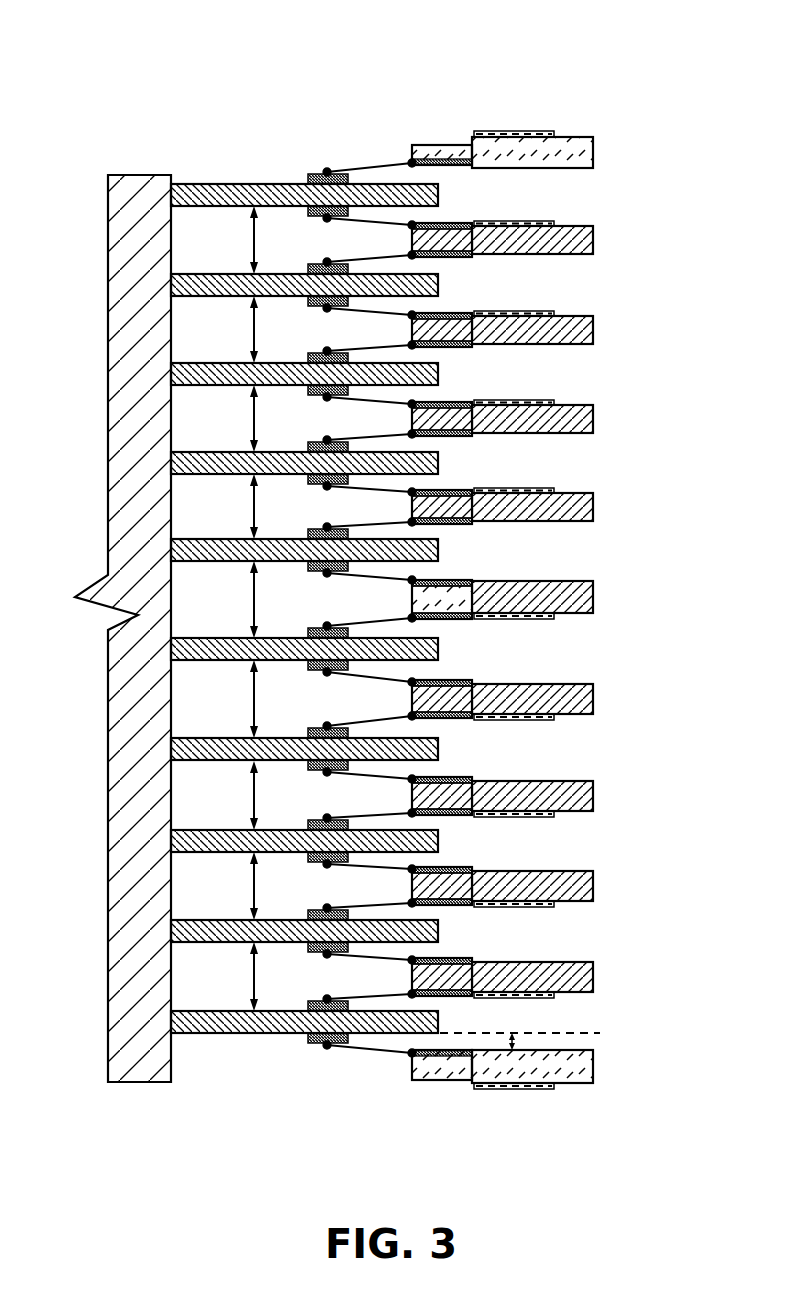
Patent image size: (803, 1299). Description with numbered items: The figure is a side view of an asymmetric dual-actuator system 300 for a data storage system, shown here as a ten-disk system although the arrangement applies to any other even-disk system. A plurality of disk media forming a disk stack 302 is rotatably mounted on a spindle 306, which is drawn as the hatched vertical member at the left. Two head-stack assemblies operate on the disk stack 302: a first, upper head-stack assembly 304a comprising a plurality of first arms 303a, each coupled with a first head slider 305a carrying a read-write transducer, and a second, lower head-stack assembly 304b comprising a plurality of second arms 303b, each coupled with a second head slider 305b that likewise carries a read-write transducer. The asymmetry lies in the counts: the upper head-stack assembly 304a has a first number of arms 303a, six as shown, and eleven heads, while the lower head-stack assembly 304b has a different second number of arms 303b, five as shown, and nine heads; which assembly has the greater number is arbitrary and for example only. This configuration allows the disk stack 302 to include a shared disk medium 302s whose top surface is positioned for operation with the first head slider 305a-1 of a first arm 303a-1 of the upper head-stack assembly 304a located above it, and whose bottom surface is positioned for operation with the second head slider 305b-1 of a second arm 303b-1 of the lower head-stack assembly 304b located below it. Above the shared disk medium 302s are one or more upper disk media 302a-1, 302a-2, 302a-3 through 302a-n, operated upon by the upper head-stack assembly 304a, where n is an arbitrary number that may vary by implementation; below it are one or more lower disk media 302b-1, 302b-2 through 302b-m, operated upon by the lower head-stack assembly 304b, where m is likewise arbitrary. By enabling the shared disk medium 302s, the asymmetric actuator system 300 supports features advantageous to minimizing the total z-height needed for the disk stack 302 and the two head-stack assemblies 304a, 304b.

The asymmetric dual-actuator system 300 is at (485, 85).
The disk stack 302 is at (192, 175).
The upper disk medium 302a-n is at (282, 208).
The upper disk medium 302a-3 is at (275, 362).
The upper disk medium 302a-2 is at (275, 451).
The upper disk medium 302a-1 is at (275, 538).
The shared disk medium 302s is at (278, 648).
The lower disk medium 302b-1 is at (273, 761).
The lower disk medium 302b-2 is at (280, 840).
The lower disk medium 302b-m is at (275, 1023).
The first head slider 305a is at (328, 163).
The first head slider of first arm 305a-1 is at (313, 627).
The second head slider of second arm 305b-1 is at (315, 672).
The second head slider 305b is at (328, 1060).
The spindle 306 is at (157, 1092).
The first head-stack assembly 304a is at (597, 630).
The first arms 303a is at (542, 376).
The first arm 303a-1 is at (586, 600).
The second head-stack assembly 304b is at (597, 1093).
The second arms 303b is at (541, 867).
The second arm 303b-1 is at (586, 693).